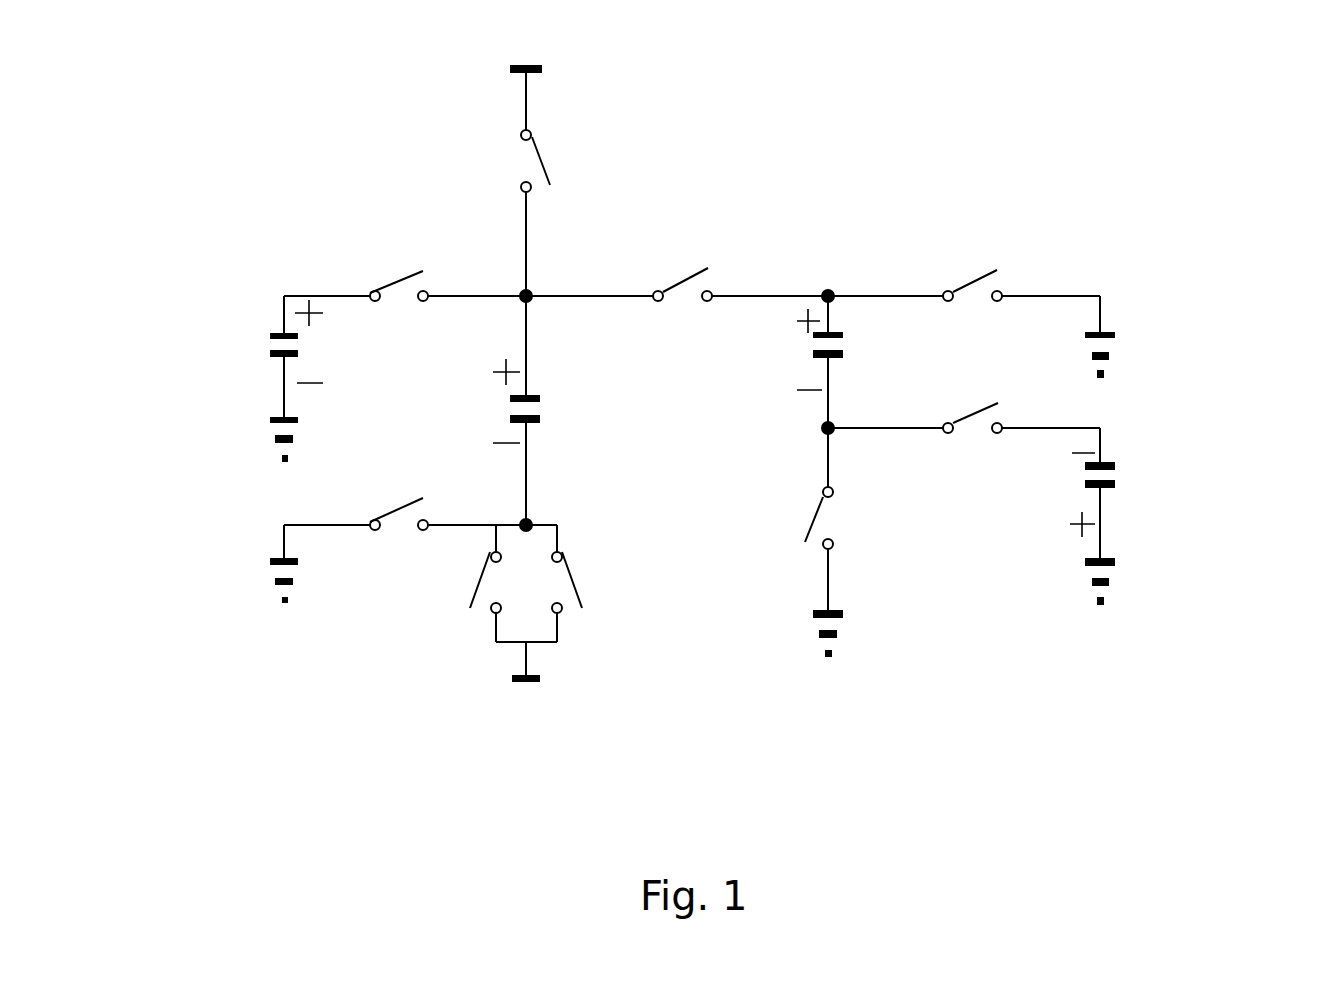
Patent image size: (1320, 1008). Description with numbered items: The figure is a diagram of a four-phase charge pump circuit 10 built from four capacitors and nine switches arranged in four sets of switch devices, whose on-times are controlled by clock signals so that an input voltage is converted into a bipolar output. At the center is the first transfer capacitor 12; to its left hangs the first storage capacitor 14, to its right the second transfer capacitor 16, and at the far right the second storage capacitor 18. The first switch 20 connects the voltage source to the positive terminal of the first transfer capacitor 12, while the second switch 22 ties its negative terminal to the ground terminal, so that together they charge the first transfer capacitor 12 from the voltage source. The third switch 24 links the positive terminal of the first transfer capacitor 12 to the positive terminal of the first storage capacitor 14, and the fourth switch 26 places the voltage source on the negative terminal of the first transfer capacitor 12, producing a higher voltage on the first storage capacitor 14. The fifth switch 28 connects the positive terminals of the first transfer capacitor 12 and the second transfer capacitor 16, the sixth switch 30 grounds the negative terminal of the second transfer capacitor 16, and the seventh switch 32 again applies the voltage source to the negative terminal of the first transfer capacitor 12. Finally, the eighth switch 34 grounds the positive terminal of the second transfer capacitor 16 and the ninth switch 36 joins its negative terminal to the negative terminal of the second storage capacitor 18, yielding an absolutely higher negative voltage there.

The charge pump circuit 10 is at (333, 177).
The first transfer capacitor 12 is at (540, 418).
The first storage capacitor 14 is at (270, 353).
The second transfer capacitor 16 is at (813, 350).
The second storage capacitor 18 is at (1113, 460).
The first switch 20 is at (543, 137).
The second switch 22 is at (400, 527).
The third switch 24 is at (400, 298).
The fourth switch 26 is at (568, 613).
The fifth switch 28 is at (718, 278).
The sixth switch 30 is at (833, 532).
The seventh switch 32 is at (482, 613).
The eighth switch 34 is at (995, 270).
The ninth switch 36 is at (983, 408).